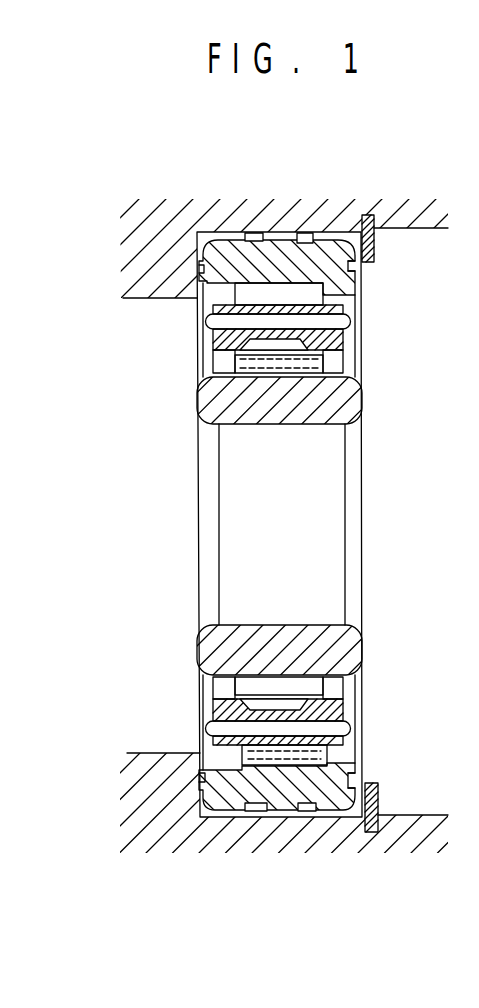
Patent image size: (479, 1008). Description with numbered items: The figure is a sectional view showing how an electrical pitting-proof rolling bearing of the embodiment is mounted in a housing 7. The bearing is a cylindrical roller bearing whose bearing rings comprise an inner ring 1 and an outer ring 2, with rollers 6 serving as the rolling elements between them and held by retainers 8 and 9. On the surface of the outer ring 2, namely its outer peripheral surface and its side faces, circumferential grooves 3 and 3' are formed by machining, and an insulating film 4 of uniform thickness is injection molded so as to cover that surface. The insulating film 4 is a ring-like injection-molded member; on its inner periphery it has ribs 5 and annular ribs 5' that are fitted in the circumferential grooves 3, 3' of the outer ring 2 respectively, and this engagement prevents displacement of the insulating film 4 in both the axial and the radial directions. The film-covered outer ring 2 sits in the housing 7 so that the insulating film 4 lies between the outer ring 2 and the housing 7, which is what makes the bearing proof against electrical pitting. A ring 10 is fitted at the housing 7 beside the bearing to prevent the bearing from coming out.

The inner ring 1 is at (335, 398).
The outer ring 2 is at (335, 281).
The circumferential groove 3 is at (280, 859).
The circumferential groove 3' is at (176, 751).
The insulating film 4 is at (231, 232).
The rib 5 is at (279, 193).
The annular rib 5' is at (133, 244).
The roller 6 is at (340, 360).
The housing 7 is at (410, 212).
The retainer 8 is at (232, 337).
The retainer 9 is at (203, 362).
The ring 10 is at (371, 248).